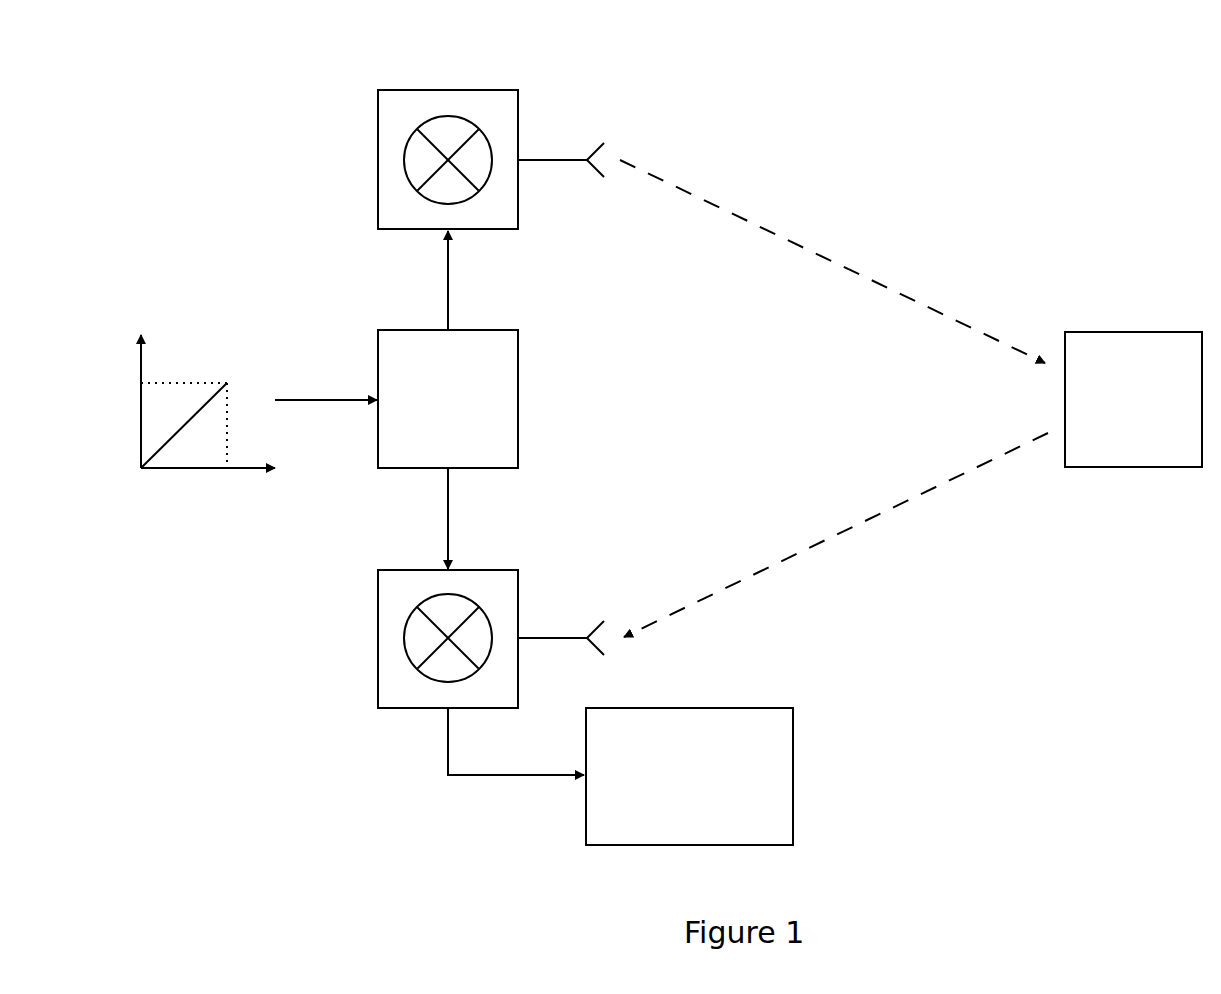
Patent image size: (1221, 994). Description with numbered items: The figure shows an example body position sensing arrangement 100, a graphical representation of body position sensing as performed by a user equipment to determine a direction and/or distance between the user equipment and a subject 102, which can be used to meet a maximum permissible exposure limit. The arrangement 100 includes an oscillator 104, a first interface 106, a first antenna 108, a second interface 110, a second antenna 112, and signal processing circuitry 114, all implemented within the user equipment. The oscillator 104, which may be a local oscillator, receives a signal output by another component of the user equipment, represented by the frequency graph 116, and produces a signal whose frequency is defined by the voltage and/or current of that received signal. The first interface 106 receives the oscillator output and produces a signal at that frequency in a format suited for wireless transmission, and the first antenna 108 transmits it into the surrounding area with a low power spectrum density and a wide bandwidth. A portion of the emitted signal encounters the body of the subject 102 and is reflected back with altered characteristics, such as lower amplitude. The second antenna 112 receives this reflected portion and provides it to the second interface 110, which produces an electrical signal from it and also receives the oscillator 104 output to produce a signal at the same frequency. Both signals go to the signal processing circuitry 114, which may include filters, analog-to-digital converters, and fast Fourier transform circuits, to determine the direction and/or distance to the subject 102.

The body position sensing arrangement 100 is at (240, 104).
The subject 102 is at (1110, 330).
The oscillator 104 is at (478, 340).
The first interface 106 is at (421, 102).
The first antenna 108 is at (600, 144).
The second interface 110 is at (494, 580).
The second antenna 112 is at (601, 622).
The signal processing circuitry 114 is at (766, 716).
The frequency graph 116 is at (206, 288).